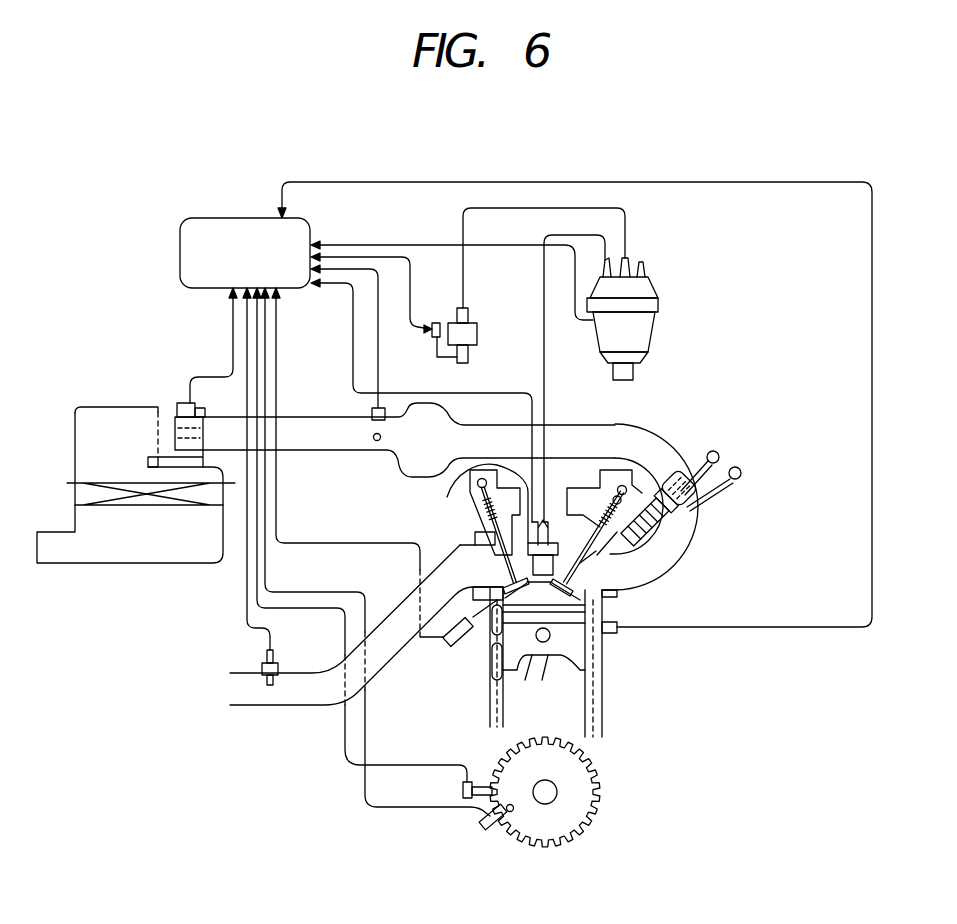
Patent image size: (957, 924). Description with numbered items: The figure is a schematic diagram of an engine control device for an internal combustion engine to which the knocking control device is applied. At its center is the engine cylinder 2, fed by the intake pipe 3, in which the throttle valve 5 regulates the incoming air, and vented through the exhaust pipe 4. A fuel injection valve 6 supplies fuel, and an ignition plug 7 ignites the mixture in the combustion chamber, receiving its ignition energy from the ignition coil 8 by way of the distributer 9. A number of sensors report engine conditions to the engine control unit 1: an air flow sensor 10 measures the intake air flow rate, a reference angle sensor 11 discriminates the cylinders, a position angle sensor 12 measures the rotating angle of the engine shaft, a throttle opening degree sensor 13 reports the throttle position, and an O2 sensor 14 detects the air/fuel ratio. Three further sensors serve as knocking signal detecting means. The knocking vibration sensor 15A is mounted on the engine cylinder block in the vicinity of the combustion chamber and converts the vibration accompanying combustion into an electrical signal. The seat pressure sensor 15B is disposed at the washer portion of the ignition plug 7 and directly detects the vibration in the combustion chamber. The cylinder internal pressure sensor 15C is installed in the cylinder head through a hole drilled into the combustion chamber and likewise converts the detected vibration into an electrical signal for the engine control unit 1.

The engine control unit 1 is at (207, 227).
The engine cylinder 2 is at (487, 668).
The intake pipe 3 is at (657, 578).
The exhaust pipe 4 is at (392, 603).
The throttle valve 5 is at (377, 441).
The fuel injection valve 6 is at (660, 527).
The ignition plug 7 is at (555, 520).
The ignition coil 8 is at (479, 334).
The distributer 9 is at (659, 310).
The air flow sensor 10 is at (183, 403).
The reference angle sensor 11 is at (488, 830).
The position angle sensor 12 is at (462, 791).
The throttle opening degree sensor 13 is at (372, 412).
The O2 sensor 14 is at (258, 665).
The knocking vibration sensor 15A is at (620, 632).
The seat pressure sensor 15B is at (450, 490).
The cylinder internal pressure sensor 15C is at (458, 644).